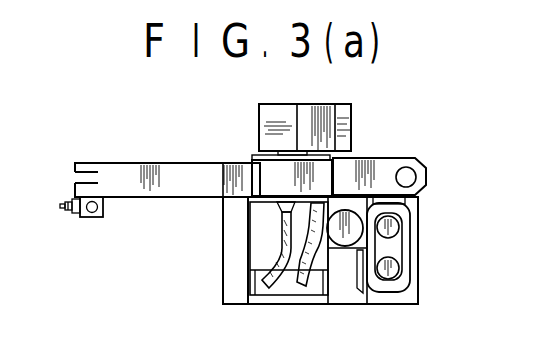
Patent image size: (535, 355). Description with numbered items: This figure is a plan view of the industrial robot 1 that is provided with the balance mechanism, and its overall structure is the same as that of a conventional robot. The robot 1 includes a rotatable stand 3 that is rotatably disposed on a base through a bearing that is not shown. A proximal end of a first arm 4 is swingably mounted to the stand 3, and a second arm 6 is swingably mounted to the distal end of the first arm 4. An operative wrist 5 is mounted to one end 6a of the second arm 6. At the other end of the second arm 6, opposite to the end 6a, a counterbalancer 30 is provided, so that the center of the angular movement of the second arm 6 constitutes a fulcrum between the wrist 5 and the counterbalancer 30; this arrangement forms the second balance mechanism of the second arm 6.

The industrial robot 1 is at (150, 282).
The rotatable stand 3 is at (237, 292).
The first arm 4 is at (340, 104).
The operative wrist 5 is at (93, 214).
The second arm 6 is at (178, 165).
The one end of the second arm 6a is at (90, 165).
The counterbalancer 30 is at (406, 167).